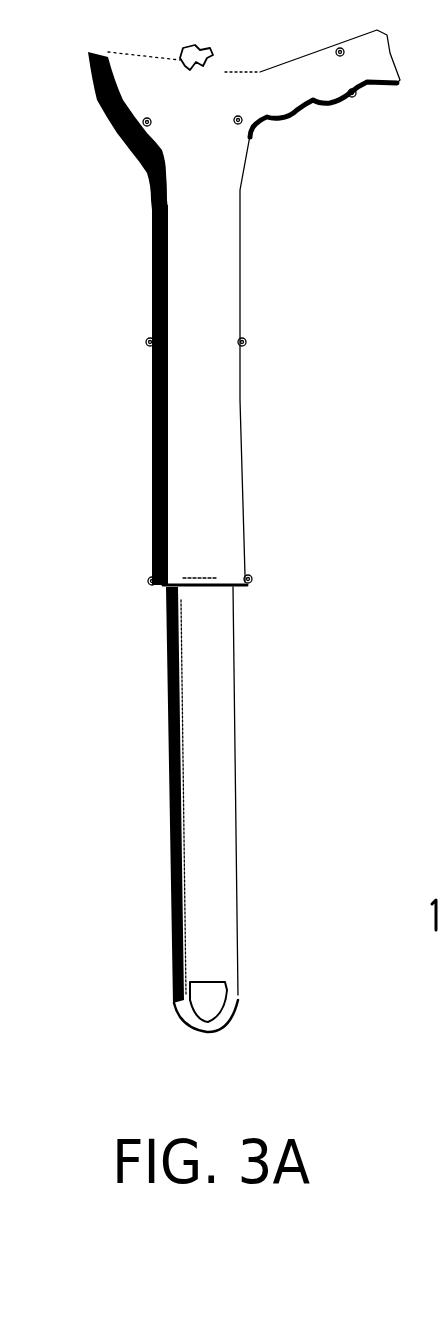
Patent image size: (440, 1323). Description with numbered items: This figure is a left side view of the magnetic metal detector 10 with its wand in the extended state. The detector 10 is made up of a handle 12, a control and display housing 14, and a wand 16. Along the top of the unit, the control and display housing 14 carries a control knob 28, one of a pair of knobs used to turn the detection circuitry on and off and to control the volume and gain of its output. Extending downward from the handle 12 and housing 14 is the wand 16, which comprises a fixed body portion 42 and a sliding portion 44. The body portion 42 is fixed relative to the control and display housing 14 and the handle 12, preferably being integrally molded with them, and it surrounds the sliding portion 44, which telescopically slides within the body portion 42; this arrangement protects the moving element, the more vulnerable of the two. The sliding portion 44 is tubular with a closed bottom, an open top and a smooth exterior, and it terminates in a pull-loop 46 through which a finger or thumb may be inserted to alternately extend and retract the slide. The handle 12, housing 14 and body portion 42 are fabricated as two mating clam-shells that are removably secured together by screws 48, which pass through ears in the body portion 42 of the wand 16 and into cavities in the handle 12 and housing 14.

The magnetic metal detector 10 is at (335, 592).
The handle 12 is at (327, 130).
The control and display housing 14 is at (103, 157).
The wand 16 is at (138, 620).
The control knob 28 is at (213, 57).
The fixed body portion 42 is at (192, 413).
The sliding portion 44 is at (195, 853).
The pull-loop 46 is at (182, 1015).
The screws 48 is at (147, 342).